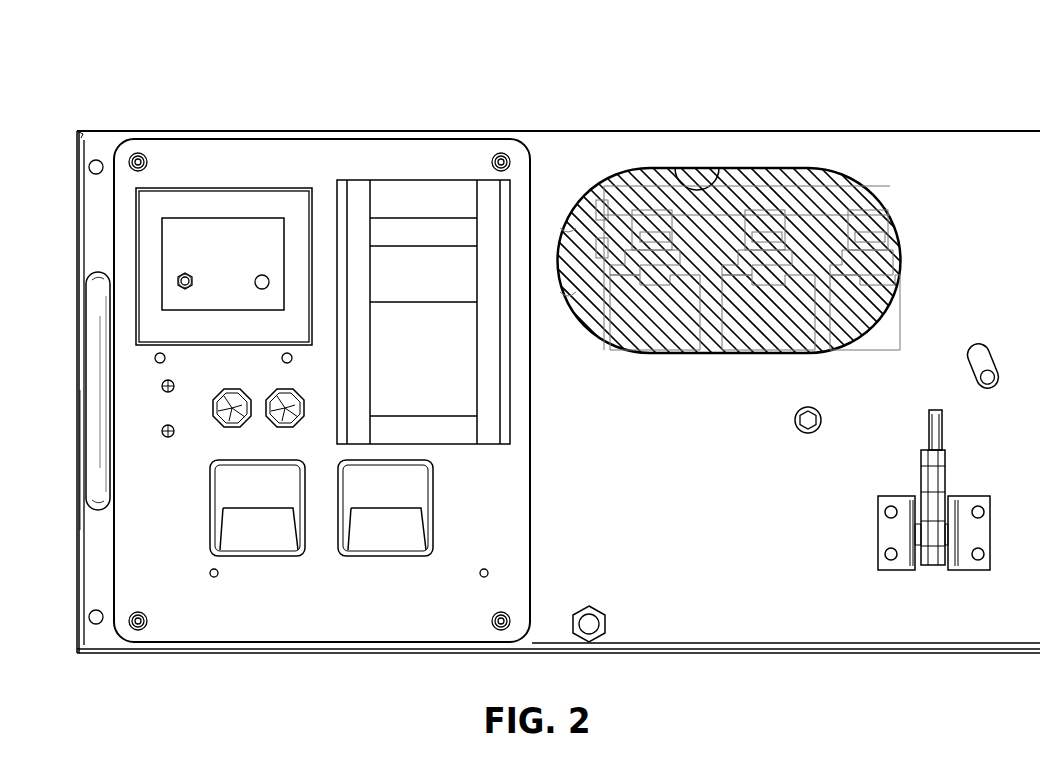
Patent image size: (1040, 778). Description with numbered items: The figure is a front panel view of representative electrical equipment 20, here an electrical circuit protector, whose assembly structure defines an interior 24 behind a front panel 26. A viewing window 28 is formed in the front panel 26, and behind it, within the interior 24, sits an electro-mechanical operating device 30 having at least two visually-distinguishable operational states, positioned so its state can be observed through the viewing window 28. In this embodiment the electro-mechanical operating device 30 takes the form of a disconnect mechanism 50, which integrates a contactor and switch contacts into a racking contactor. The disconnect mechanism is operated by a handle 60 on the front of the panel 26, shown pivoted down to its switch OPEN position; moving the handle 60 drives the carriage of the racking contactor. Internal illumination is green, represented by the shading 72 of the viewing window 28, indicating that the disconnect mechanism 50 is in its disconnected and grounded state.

The electrical equipment 20 is at (873, 77).
The front panel 26 is at (843, 140).
The viewing window 28 is at (720, 178).
The interior 24 is at (820, 228).
The electro-mechanical operating device 30 is at (872, 229).
The disconnect mechanism 50 is at (706, 200).
The shading 72 is at (632, 176).
The handle 60 is at (940, 440).